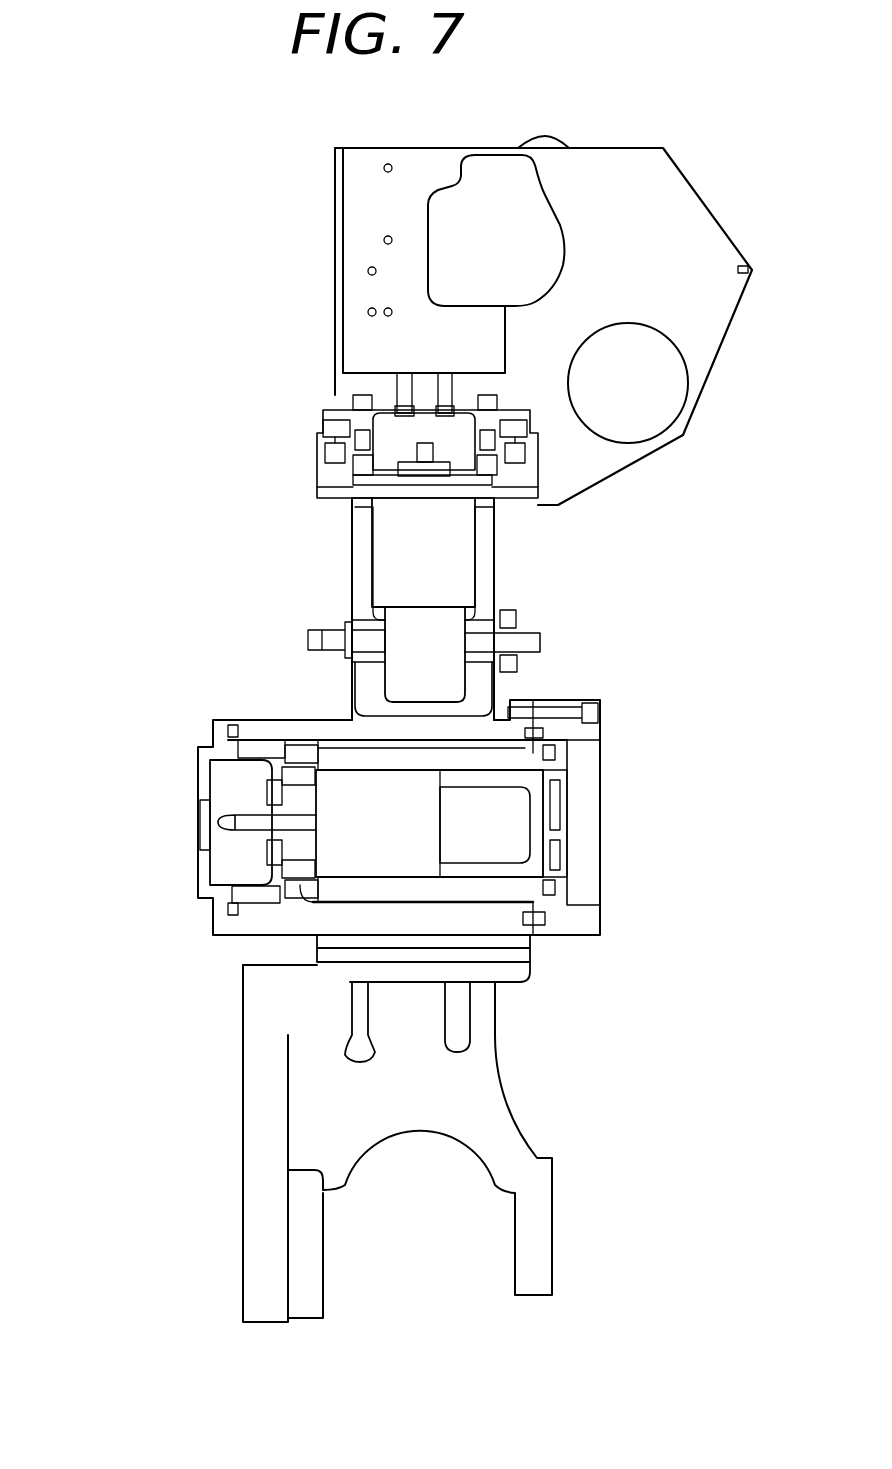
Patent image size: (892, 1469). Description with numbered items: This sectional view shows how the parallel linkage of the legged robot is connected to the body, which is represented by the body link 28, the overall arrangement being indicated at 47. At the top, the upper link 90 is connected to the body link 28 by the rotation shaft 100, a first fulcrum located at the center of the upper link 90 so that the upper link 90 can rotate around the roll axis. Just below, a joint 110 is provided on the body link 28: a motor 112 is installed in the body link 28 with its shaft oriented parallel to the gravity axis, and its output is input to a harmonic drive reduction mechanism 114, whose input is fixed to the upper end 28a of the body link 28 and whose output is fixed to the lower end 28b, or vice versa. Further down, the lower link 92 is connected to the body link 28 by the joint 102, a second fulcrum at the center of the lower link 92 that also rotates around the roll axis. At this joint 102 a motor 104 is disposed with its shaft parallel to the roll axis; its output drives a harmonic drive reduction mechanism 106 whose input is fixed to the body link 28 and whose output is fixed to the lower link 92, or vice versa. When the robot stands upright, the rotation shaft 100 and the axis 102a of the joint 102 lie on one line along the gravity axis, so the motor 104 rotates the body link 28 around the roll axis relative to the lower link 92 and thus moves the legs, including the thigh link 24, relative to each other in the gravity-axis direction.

The upper end of the body link 28a is at (338, 240).
The joint 110 is at (302, 405).
The harmonic drive reduction mechanism 114 is at (388, 480).
The motor 112 is at (452, 530).
The lower end of the body link 28b is at (372, 512).
The upper link 90 is at (508, 612).
The rotation shaft 100 is at (540, 633).
The drive assembly 47 is at (628, 685).
The body link 28 is at (545, 700).
The lower link 92 is at (337, 760).
The motor 104 is at (418, 838).
The harmonic drive reduction mechanism 106 is at (230, 790).
The axis of the joint 102a is at (215, 822).
The joint 102 is at (190, 838).
The thigh link 24 is at (473, 1085).